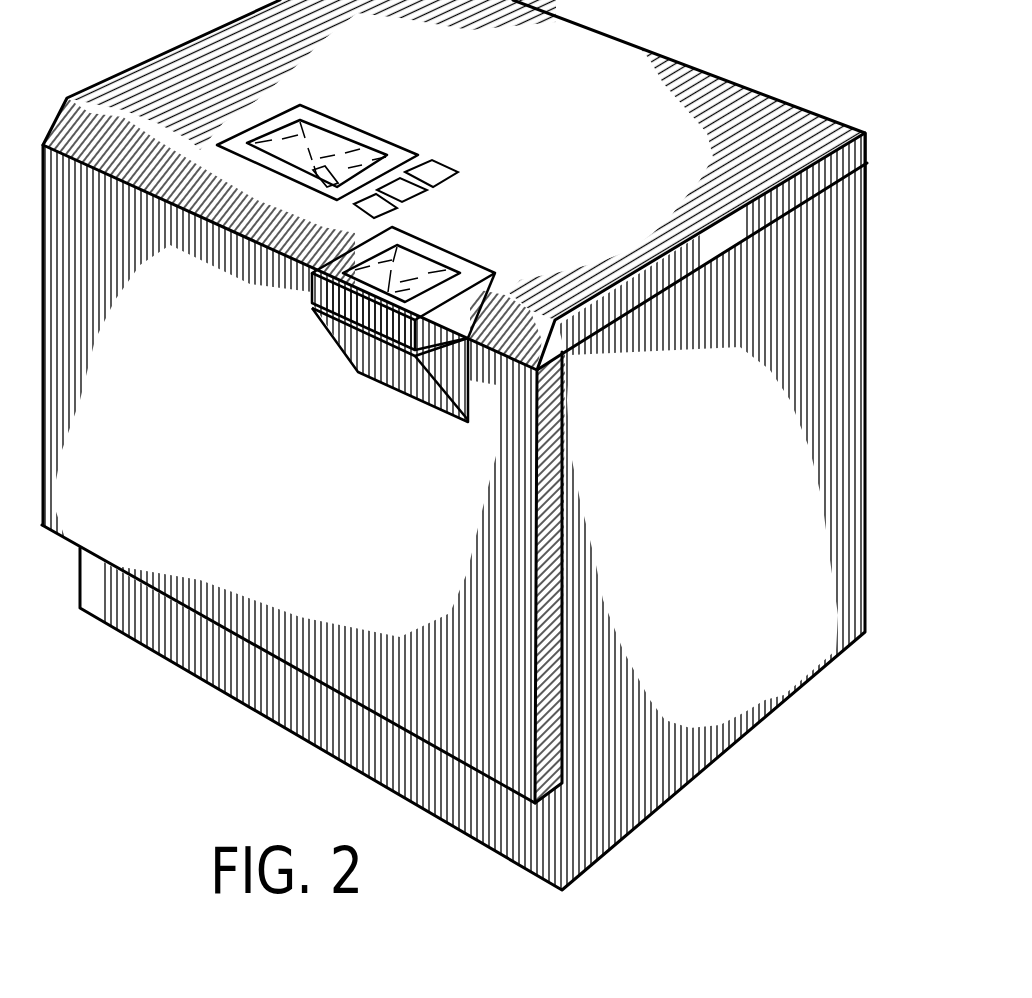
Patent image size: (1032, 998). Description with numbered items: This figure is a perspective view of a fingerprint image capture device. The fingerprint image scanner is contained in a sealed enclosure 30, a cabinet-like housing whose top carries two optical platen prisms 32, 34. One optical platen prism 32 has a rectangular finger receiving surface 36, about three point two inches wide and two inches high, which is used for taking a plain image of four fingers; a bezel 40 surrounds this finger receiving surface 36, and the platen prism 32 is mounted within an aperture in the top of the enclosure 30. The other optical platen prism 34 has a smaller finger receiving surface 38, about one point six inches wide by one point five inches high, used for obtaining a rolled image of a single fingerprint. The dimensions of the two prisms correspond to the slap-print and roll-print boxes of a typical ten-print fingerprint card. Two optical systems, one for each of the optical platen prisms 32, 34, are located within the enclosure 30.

The sealed enclosure 30 is at (867, 328).
The optical platen prism 32 is at (367, 157).
The optical platen prism 34 is at (430, 275).
The finger receiving surface 36 is at (327, 133).
The finger receiving surface 38 is at (412, 262).
The bezel 40 is at (268, 123).